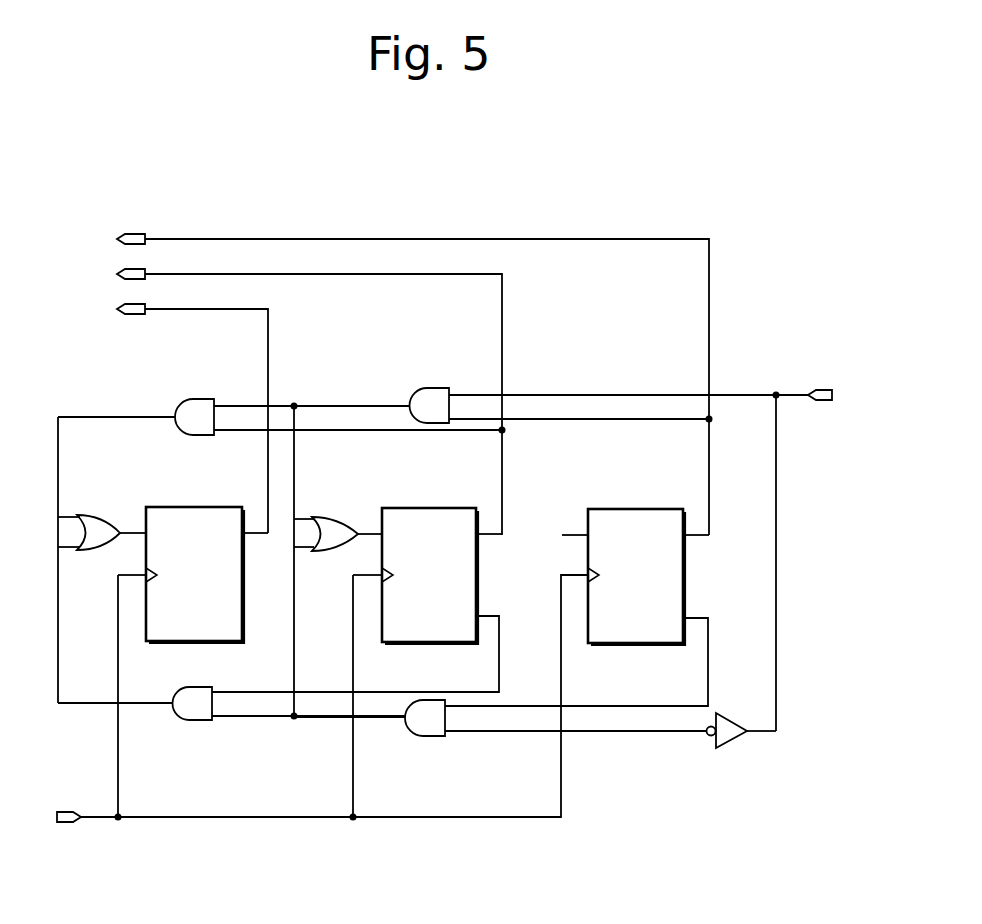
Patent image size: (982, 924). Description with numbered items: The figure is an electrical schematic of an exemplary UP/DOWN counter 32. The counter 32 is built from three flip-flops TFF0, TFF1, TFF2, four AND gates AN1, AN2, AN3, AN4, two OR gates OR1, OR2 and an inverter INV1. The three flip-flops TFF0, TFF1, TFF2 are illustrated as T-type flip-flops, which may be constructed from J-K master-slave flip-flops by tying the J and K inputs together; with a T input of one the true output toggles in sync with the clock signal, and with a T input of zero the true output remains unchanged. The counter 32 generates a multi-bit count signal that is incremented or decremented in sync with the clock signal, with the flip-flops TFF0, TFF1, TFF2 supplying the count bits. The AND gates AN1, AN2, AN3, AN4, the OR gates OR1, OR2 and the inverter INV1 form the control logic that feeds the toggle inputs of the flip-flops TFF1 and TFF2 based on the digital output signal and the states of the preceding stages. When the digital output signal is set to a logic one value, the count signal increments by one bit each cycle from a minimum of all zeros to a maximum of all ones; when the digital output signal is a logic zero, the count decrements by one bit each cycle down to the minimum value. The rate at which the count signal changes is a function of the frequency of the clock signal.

The counter 32 is at (803, 196).
The AND gate AN1 is at (430, 387).
The AND gate AN2 is at (196, 398).
The AND gate AN3 is at (428, 738).
The AND gate AN4 is at (196, 722).
The OR gate OR1 is at (325, 516).
The OR gate OR2 is at (90, 514).
The inverter INV1 is at (728, 750).
The T-type flip-flop TFF0 is at (636, 577).
The T-type flip-flop TFF1 is at (430, 576).
The T-type flip-flop TFF2 is at (195, 575).